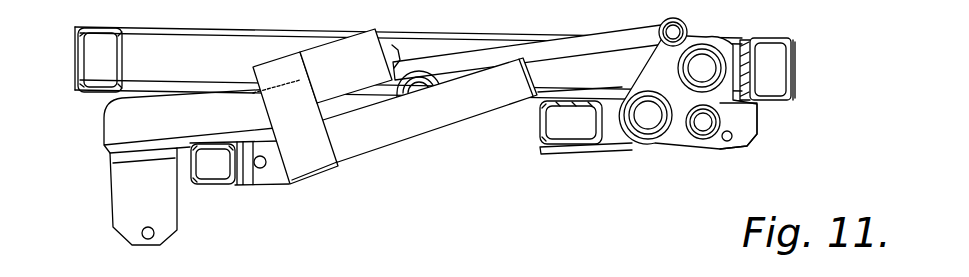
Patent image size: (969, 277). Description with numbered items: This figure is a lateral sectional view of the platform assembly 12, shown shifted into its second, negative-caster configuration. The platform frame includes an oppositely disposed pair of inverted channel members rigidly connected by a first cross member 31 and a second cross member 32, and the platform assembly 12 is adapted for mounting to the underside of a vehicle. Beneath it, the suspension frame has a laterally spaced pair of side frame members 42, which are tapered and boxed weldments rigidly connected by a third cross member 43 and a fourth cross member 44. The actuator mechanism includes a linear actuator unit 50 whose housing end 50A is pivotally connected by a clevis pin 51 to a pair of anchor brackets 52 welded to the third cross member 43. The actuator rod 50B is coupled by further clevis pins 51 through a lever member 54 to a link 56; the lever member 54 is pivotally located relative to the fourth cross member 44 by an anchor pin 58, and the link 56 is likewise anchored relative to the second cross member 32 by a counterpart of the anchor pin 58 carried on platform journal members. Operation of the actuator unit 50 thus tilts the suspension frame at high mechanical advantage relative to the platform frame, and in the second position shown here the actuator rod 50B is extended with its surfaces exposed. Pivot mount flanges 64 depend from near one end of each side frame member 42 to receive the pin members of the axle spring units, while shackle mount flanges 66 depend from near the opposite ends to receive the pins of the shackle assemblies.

The platform assembly 12 is at (612, 214).
The first cross member 31 is at (121, 62).
The second cross member 32 is at (786, 101).
The side frame member 42 is at (100, 124).
The third cross member 43 is at (204, 144).
The fourth cross member 44 is at (542, 146).
The linear actuator unit 50 is at (407, 138).
The housing end 50A is at (290, 186).
The actuator rod 50B is at (562, 54).
The clevis pin 51 is at (662, 27).
The anchor bracket 52 is at (247, 182).
The lever member 54 is at (681, 146).
The link 56 is at (735, 42).
The anchor pin 58 is at (647, 131).
The pivot mount flange 64 is at (748, 145).
The shackle mount flange 66 is at (181, 229).